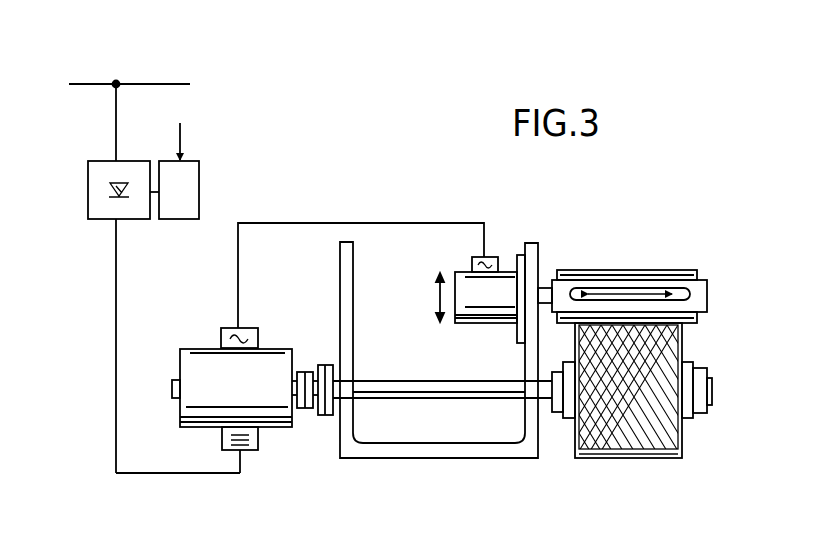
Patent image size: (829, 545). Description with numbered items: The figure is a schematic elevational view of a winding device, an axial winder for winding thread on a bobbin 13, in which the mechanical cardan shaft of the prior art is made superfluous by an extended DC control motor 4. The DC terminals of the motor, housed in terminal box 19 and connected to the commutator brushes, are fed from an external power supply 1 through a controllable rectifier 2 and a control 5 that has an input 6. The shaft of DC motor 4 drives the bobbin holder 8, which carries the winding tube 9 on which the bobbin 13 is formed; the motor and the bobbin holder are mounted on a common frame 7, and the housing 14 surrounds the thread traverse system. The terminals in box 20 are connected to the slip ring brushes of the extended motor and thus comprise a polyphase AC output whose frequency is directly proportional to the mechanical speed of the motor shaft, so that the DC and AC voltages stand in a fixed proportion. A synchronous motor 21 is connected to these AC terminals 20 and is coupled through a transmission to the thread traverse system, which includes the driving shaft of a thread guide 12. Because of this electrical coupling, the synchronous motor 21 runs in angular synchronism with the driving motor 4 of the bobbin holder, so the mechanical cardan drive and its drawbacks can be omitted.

The external power supply 1 is at (190, 85).
The controllable rectifier 2 is at (102, 160).
The extended DC control motor 4 is at (278, 428).
The control 5 is at (199, 200).
The input 6 is at (191, 139).
The frame / shaft 7 is at (447, 400).
The bobbin holder 8 is at (705, 393).
The winding tube 9 is at (688, 423).
The thread guide 12 is at (628, 293).
The bobbin 13 is at (630, 460).
The housing 14 is at (680, 275).
The terminal box 19 is at (220, 446).
The AC terminals box 20 is at (220, 337).
The synchronous motor 21 is at (505, 272).